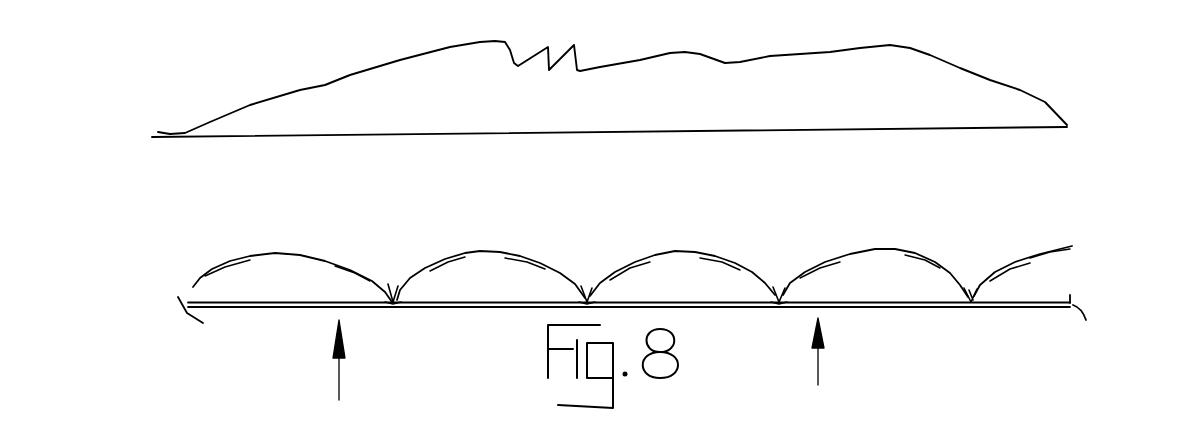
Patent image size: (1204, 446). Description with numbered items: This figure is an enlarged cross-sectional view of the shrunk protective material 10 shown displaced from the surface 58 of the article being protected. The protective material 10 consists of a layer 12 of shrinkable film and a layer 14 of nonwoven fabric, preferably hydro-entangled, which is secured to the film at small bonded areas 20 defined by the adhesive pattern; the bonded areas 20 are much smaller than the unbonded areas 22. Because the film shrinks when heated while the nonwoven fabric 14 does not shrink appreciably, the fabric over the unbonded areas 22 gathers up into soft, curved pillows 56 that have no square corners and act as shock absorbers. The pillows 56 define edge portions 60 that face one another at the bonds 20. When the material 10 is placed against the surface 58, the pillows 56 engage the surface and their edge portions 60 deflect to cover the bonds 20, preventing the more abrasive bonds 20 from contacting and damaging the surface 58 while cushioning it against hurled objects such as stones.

The protective material 10 is at (1108, 248).
The layer of shrinkable film 12 is at (917, 305).
The layer of nonwoven fabric 14 is at (923, 253).
The bonded areas 20 is at (587, 300).
The unbonded areas 22 is at (493, 300).
The pillows 56 is at (305, 255).
The surface of the article being protected 58 is at (782, 132).
The edge portions 60 is at (395, 290).